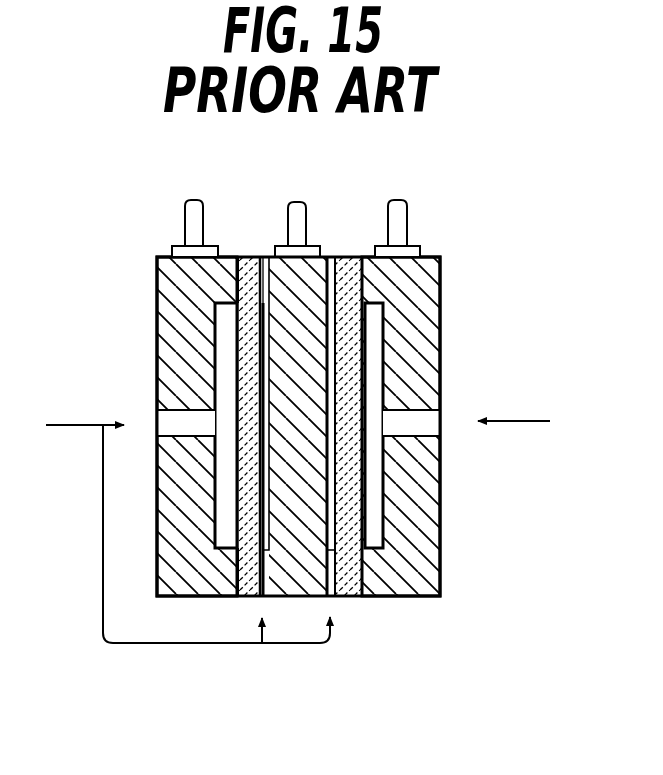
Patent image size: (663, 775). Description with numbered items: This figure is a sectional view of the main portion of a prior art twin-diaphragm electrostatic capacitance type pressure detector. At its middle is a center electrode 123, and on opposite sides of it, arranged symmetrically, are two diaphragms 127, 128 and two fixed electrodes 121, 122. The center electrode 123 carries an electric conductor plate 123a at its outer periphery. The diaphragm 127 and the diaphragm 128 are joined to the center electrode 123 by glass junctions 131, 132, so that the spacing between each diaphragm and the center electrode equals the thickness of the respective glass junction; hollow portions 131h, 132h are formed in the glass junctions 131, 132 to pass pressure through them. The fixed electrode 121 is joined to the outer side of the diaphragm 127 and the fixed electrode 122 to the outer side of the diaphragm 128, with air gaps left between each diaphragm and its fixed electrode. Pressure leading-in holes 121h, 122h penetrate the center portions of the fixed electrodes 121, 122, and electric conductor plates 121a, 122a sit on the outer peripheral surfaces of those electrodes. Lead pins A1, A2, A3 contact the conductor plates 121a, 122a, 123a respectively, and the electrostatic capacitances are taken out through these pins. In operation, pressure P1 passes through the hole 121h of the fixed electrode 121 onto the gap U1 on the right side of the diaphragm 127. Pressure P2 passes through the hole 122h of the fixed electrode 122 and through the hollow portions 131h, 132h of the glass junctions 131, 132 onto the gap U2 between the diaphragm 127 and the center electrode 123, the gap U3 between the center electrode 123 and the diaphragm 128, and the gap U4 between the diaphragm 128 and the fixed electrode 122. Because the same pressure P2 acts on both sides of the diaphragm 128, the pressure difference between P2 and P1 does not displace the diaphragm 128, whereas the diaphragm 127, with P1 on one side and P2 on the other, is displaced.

The fixed electrode 121 is at (441, 282).
The fixed electrode 122 is at (157, 290).
The center electrode 123 is at (290, 598).
The electric conductor plate 123a is at (310, 257).
The electric conductor plate 121a is at (410, 257).
The electric conductor plate 122a is at (172, 250).
The pressure leading-in hole 121h is at (441, 455).
The pressure leading-in hole 122h is at (183, 437).
The diaphragm 127 is at (383, 517).
The diaphragm 128 is at (237, 515).
The glass junction 131 is at (333, 257).
The glass junction 132 is at (262, 257).
The hollow portion 131h is at (333, 588).
The hollow portion 132h is at (250, 579).
The lead pin A1 is at (397, 217).
The lead pin A2 is at (195, 217).
The lead pin A3 is at (297, 212).
The gap U1 is at (372, 328).
The gap U2 is at (338, 370).
The gap U3 is at (258, 333).
The gap U4 is at (223, 368).
The pressure P1 is at (535, 423).
The pressure P2 is at (169, 528).